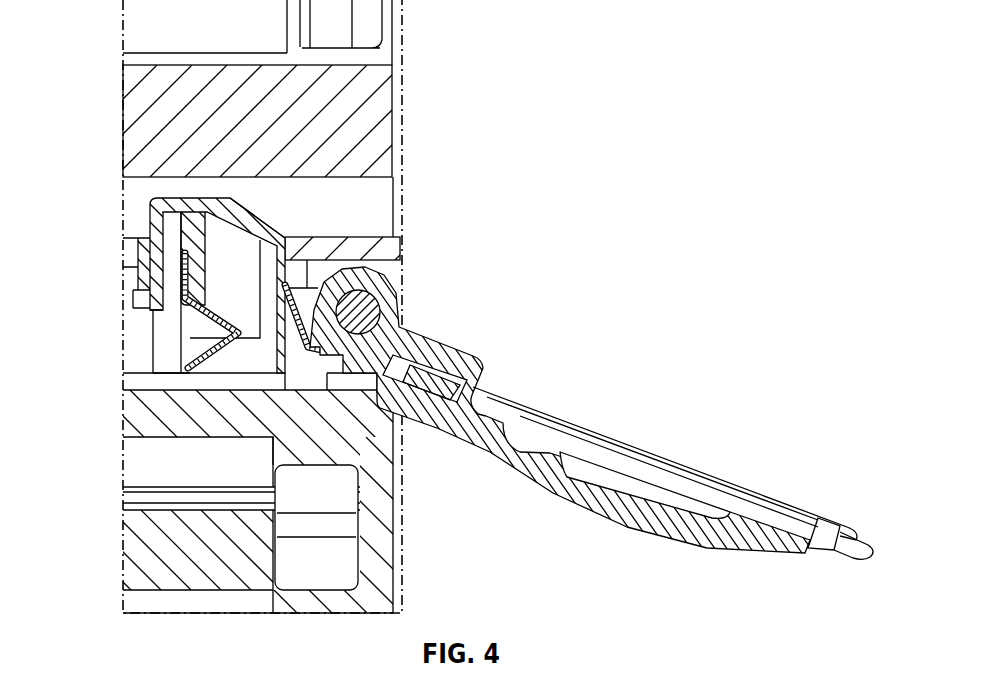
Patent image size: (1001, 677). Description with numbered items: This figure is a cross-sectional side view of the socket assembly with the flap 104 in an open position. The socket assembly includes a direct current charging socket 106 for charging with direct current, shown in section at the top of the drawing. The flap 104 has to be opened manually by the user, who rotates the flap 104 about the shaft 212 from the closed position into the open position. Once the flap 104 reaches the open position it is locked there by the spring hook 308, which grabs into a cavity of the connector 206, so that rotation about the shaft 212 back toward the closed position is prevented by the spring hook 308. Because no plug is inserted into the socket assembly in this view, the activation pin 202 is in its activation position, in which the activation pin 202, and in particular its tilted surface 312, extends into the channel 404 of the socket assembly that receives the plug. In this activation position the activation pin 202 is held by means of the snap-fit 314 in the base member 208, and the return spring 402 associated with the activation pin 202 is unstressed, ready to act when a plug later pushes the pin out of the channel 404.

The flap 104 is at (833, 553).
The direct current charging socket 106 is at (380, 57).
The activation pin 202 is at (222, 237).
The connector 206 is at (402, 330).
The base member 208 is at (150, 357).
The shaft 212 is at (378, 303).
The spring hook 308 is at (288, 283).
The tilted surface 312 is at (260, 217).
The snap-fit 314 is at (156, 267).
The return spring 402 is at (183, 357).
The channel 404 is at (370, 225).